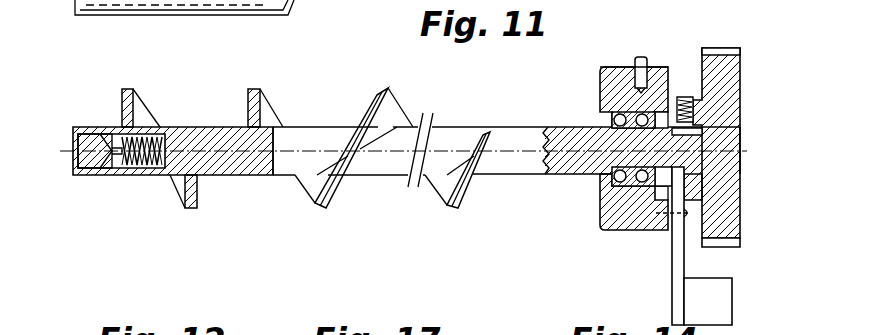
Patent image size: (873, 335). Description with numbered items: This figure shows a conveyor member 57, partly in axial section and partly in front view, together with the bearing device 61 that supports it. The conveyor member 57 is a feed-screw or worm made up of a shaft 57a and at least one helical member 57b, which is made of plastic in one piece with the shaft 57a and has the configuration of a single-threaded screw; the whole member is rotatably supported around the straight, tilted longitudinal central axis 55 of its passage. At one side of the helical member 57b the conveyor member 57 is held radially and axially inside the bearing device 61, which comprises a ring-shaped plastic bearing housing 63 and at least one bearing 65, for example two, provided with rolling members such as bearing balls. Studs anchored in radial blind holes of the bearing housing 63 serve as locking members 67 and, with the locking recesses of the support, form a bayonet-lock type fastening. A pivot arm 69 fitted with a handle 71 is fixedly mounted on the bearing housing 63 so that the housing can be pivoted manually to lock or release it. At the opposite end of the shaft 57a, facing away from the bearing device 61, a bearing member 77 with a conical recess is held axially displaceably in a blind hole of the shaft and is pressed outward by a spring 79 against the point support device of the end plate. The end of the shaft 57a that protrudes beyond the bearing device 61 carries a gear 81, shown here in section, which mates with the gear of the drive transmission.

The longitudinal central axis 55 is at (471, 150).
The conveyor member 57 is at (448, 185).
The shaft 57a is at (247, 177).
The helical member 57b is at (325, 208).
The bearing device 61 is at (614, 64).
The bearing housing 63 is at (607, 90).
The bearing 65 is at (600, 113).
The locking member 67 is at (641, 62).
The pivot arm 69 is at (672, 250).
The handle 71 is at (727, 293).
The bearing member 77 is at (96, 175).
The spring 79 is at (142, 166).
The gear 81 is at (715, 58).